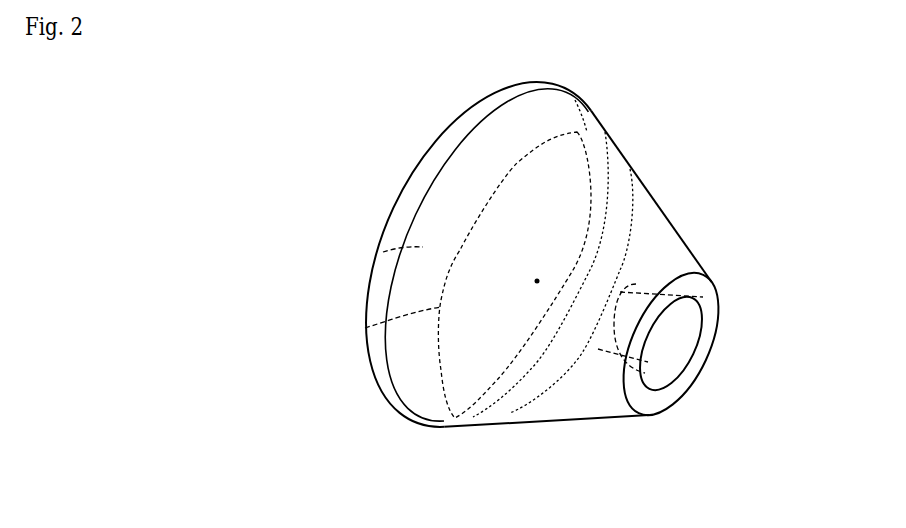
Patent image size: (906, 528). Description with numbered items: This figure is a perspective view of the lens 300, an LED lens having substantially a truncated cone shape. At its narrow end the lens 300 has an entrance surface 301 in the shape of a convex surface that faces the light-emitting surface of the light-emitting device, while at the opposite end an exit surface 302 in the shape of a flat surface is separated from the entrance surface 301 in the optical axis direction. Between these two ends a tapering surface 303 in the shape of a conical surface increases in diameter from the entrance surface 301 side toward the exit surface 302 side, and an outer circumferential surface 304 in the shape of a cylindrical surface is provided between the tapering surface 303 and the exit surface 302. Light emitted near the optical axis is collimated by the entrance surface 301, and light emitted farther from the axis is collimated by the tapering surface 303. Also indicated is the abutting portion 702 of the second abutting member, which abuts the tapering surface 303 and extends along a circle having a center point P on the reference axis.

The lens 300 is at (338, 198).
The entrance surface 301 is at (672, 335).
The exit surface 302 is at (383, 251).
The tapering surface 303 is at (647, 233).
The outer circumferential surface 304 is at (467, 124).
The abutting portion 702 is at (365, 328).
The center point P is at (537, 280).